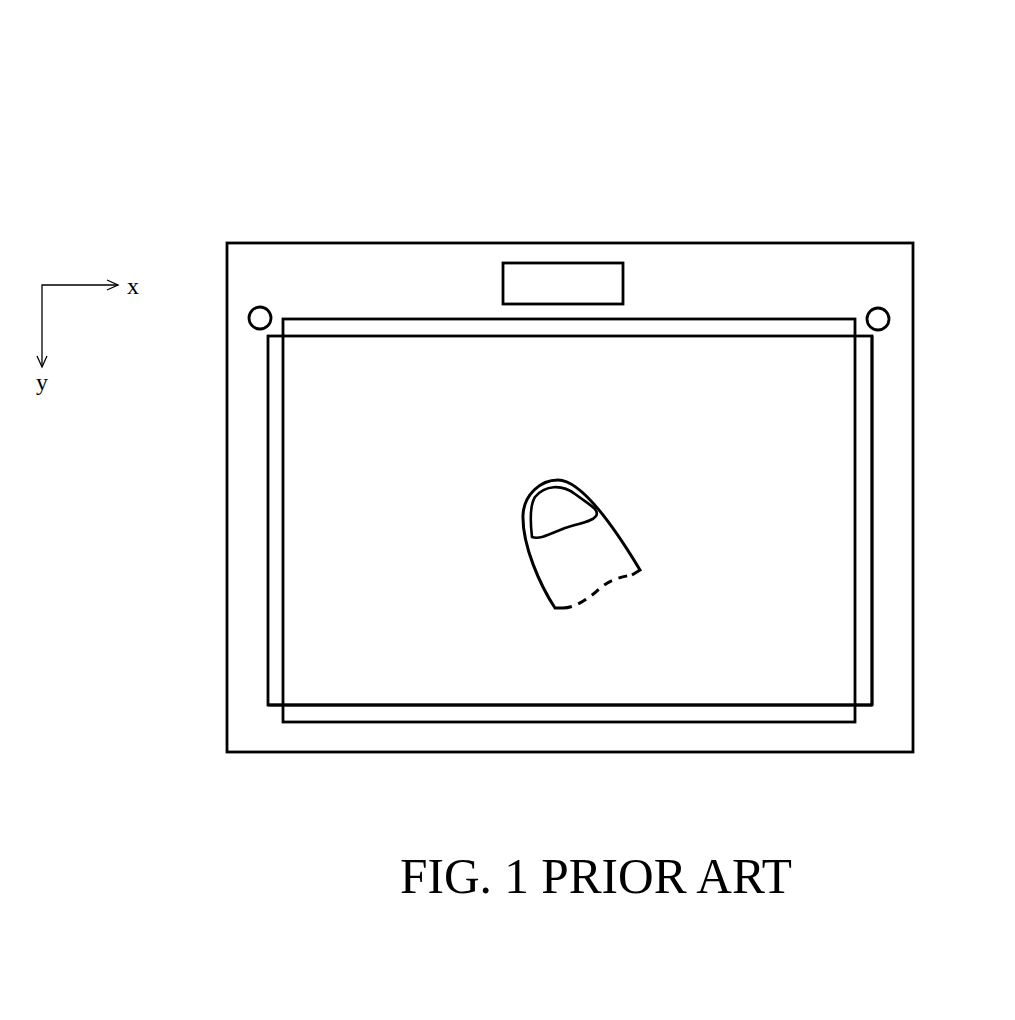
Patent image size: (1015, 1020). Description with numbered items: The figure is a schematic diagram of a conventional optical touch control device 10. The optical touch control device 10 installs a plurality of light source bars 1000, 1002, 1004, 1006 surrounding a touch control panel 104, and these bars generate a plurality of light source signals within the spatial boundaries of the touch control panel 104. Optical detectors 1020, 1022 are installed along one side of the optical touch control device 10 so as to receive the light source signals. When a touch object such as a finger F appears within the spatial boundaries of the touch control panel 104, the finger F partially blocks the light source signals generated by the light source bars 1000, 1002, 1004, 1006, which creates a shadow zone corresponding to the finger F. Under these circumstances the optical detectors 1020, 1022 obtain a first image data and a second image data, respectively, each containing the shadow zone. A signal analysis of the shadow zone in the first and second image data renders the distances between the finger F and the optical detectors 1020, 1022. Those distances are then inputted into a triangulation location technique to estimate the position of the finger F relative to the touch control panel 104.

The optical touch control device 10 is at (822, 118).
The light source bar 1000 is at (708, 327).
The light source bar 1002 is at (268, 508).
The light source bar 1004 is at (553, 713).
The light source bar 1006 is at (865, 519).
The touch control panel 104 is at (575, 275).
The optical detector 1020 is at (261, 310).
The optical detector 1022 is at (878, 311).
The finger F is at (632, 540).